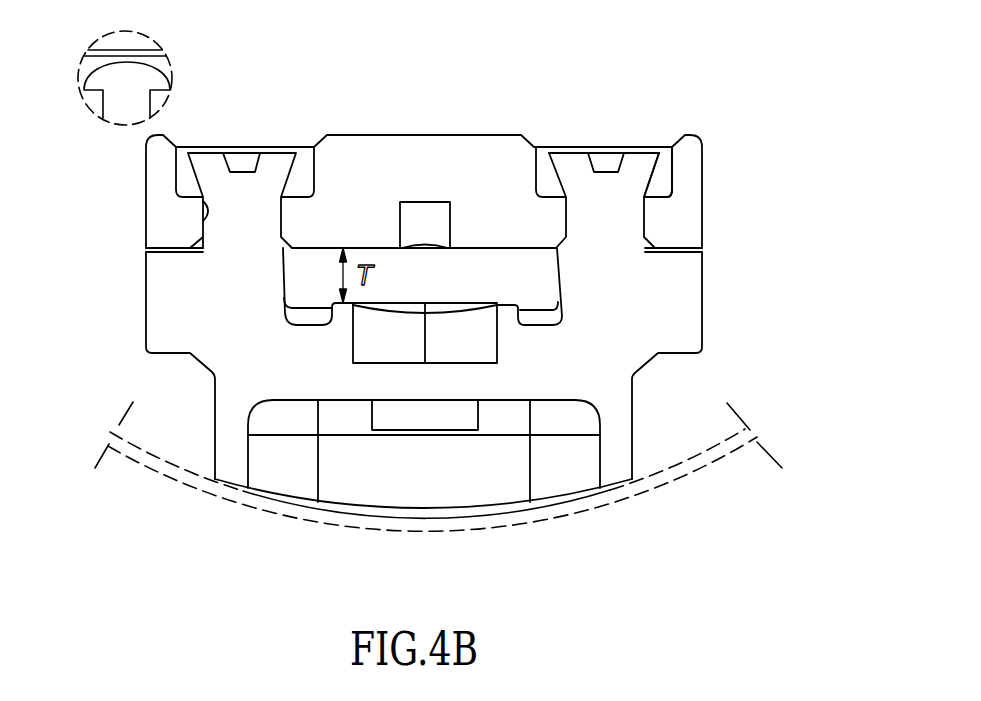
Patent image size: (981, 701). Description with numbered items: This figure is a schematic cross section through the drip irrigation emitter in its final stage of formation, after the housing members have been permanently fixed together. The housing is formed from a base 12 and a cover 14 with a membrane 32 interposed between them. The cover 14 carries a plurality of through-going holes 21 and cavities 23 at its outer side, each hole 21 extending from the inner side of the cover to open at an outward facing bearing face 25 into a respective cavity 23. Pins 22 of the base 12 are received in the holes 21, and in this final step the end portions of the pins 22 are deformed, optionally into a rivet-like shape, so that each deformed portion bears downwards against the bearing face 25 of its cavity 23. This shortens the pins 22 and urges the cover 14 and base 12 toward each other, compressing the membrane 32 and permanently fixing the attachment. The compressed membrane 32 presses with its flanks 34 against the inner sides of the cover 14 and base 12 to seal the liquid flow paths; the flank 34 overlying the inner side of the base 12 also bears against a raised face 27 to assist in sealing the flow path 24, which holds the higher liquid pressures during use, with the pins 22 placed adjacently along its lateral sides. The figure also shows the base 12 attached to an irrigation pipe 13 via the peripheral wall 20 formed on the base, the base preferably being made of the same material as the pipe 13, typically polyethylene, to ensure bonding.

The base 12 is at (637, 457).
The irrigation pipe 13 is at (172, 480).
The cover 14 is at (489, 134).
The peripheral wall 20 is at (250, 458).
The hole 21 is at (205, 203).
The pin 22 is at (636, 155).
The cavity 23 is at (668, 152).
The bearing face 25 is at (657, 196).
The raised face 27 is at (503, 302).
The membrane 32 is at (315, 275).
The flank 34 is at (467, 312).
The flow path 24 is at (382, 333).